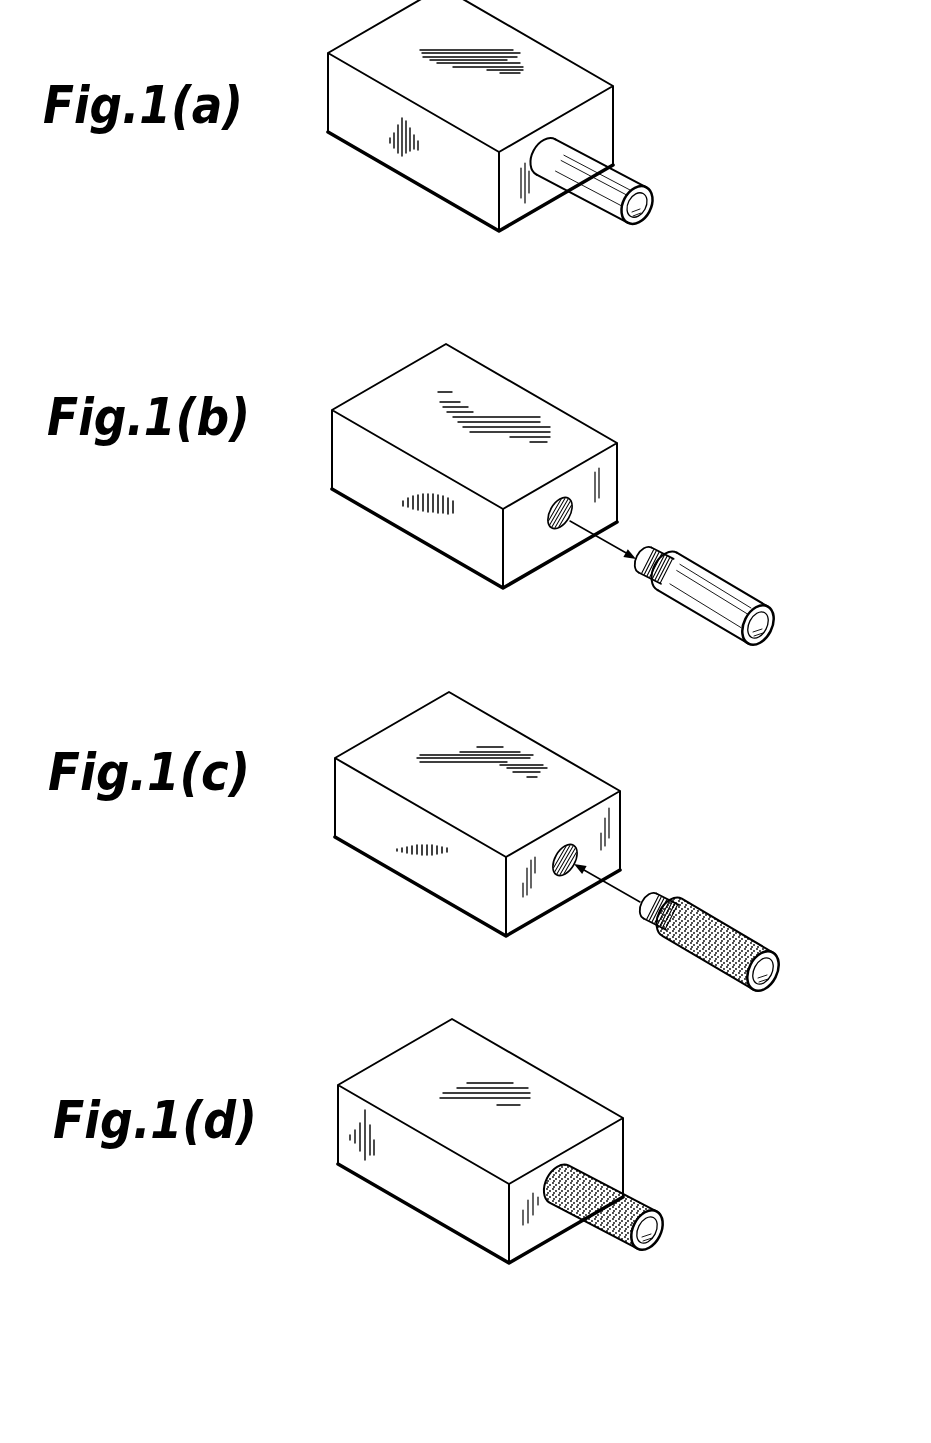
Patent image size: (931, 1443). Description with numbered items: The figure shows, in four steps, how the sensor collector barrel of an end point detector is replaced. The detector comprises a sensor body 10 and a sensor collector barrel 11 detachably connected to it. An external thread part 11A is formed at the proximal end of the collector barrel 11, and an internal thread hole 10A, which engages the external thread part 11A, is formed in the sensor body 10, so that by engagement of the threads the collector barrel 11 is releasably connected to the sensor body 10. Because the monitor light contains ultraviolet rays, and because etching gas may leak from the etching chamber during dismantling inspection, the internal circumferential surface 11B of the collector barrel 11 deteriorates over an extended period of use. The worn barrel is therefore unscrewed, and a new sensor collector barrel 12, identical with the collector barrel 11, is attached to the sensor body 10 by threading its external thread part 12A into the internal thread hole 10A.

In FIG. 1A, the sensor body 10 is at (437, 181).
In FIG. 1B, the sensor body 10 is at (423, 533).
In FIG. 1C, the sensor body 10 is at (377, 843).
In FIG. 1D, the sensor body 10 is at (417, 1192).
In FIG. 1B, the internal thread hole 10A is at (553, 530).
In FIG. 1C, the internal thread hole 10A is at (568, 878).
In FIG. 1A, the sensor collector barrel 11 is at (592, 207).
In FIG. 1B, the sensor collector barrel 11 is at (691, 622).
In FIG. 1B, the external thread part 11A is at (648, 585).
In FIG. 1A, the internal circumferential surface 11B is at (643, 218).
In FIG. 1C, the new sensor collector barrel 12 is at (692, 970).
In FIG. 1D, the new sensor collector barrel 12 is at (611, 1240).
In FIG. 1C, the external thread part 12A is at (650, 933).